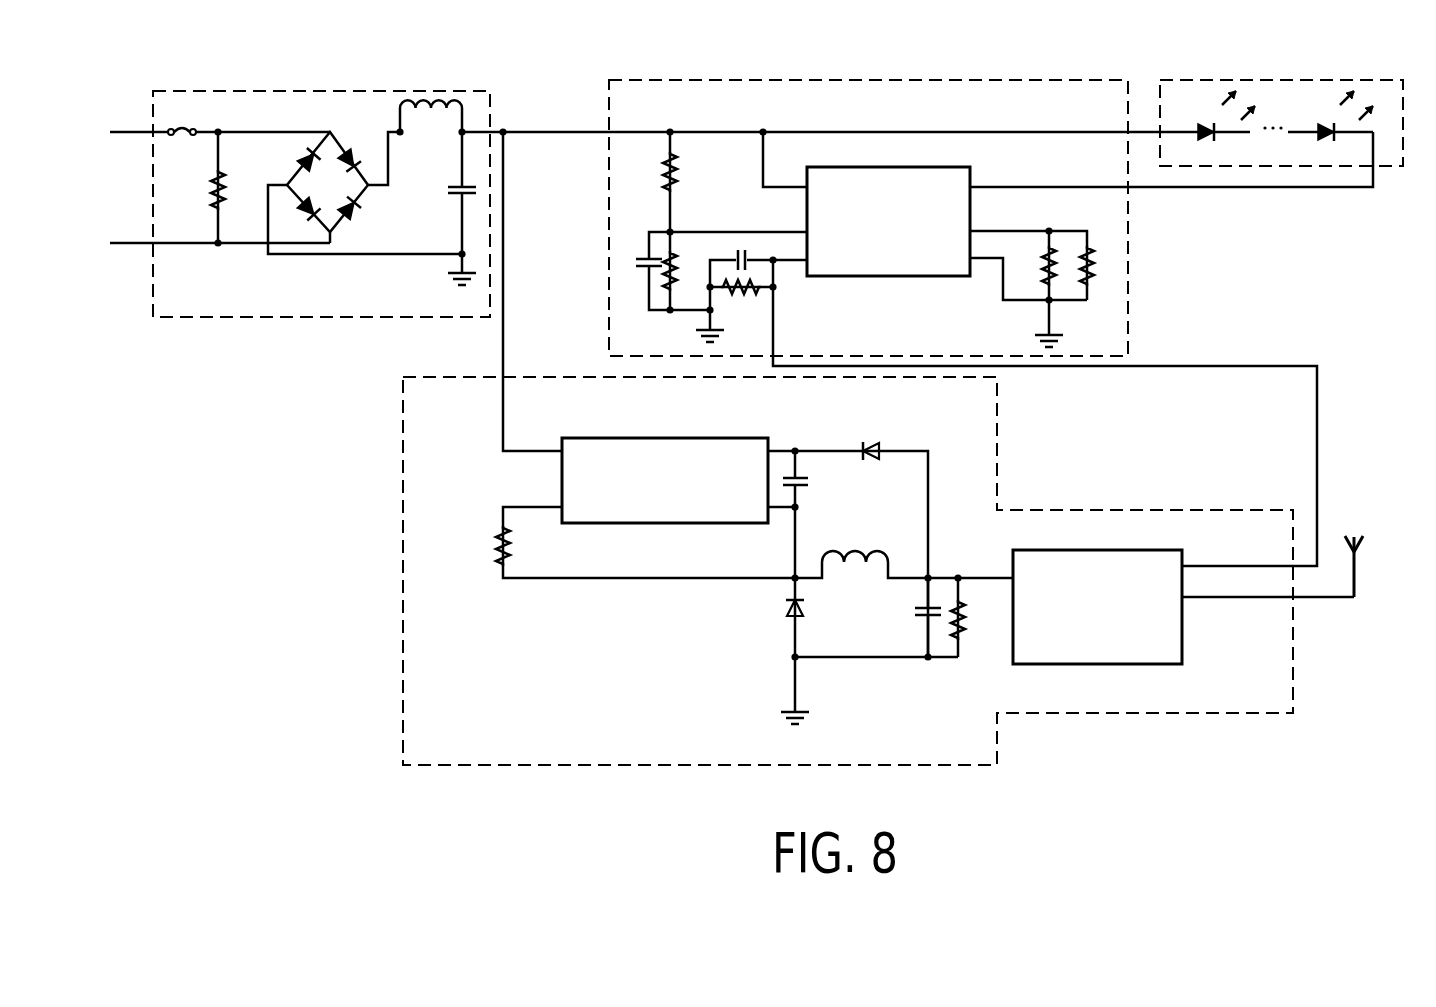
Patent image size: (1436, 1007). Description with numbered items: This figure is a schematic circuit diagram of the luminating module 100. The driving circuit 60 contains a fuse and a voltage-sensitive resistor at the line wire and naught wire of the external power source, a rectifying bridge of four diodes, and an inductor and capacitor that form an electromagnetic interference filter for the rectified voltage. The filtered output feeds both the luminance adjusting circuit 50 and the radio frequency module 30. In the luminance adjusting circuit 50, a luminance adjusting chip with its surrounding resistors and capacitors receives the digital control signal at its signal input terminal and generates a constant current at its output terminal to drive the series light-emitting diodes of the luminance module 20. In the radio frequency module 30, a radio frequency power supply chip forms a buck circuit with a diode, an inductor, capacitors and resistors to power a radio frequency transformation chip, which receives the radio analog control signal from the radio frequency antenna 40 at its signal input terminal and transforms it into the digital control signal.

The LED lighting device 100 is at (1200, 26).
The driving circuit 60 is at (340, 91).
The luminance adjusting circuit 50 is at (997, 80).
The luminance module 20 is at (1270, 80).
The radio frequency module 30 is at (1187, 510).
The radio frequency antenna 40 is at (1358, 583).